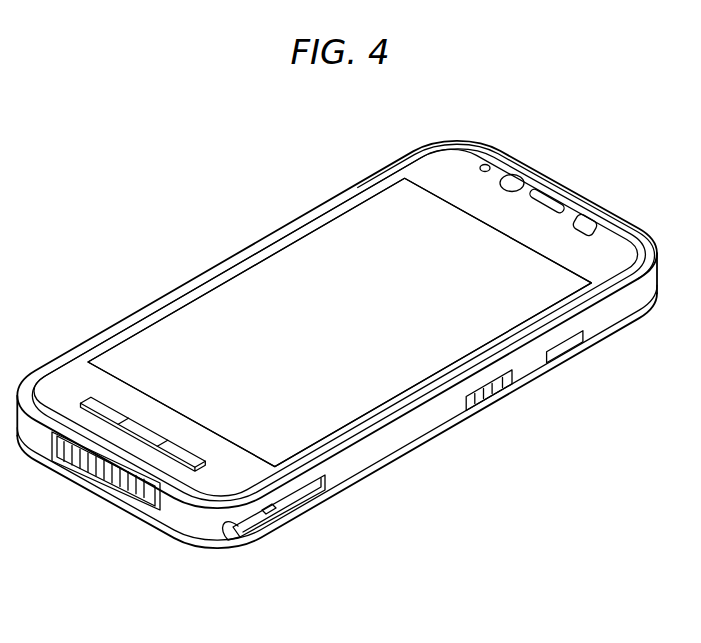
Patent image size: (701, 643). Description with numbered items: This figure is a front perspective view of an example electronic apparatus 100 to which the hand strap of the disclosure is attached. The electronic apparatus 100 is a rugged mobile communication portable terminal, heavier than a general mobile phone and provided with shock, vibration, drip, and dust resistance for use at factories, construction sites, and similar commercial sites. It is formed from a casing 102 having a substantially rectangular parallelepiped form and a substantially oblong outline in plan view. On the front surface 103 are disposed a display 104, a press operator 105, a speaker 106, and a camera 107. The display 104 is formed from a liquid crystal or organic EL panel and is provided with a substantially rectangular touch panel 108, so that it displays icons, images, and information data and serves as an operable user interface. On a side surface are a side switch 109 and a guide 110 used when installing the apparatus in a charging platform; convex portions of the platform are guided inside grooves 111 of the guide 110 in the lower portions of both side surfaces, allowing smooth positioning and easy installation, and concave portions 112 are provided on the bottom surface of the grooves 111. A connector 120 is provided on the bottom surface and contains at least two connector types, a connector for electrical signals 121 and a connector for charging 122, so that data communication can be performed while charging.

The electronic apparatus 100 is at (258, 232).
The casing 102 is at (650, 255).
The front surface 103 is at (398, 197).
The display 104 is at (193, 312).
The press operator 105 is at (95, 403).
The speaker 106 is at (545, 203).
The camera 107 is at (512, 180).
The touch panel 108 is at (385, 375).
The side switch 109 is at (493, 397).
The guide 110 is at (228, 528).
The groove 111 is at (307, 493).
The concave portion 112 is at (270, 513).
The connector 120 is at (158, 507).
The connector for electrical signals 121 is at (117, 480).
The connector for charging 122 is at (82, 463).